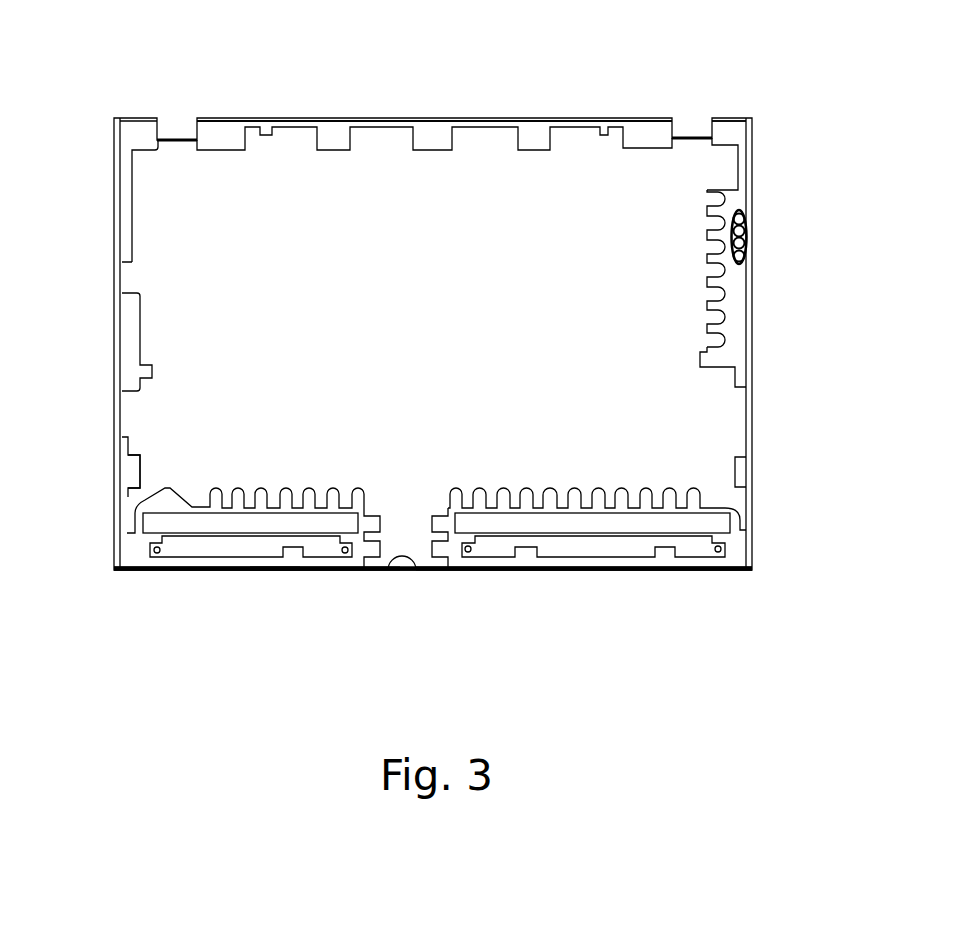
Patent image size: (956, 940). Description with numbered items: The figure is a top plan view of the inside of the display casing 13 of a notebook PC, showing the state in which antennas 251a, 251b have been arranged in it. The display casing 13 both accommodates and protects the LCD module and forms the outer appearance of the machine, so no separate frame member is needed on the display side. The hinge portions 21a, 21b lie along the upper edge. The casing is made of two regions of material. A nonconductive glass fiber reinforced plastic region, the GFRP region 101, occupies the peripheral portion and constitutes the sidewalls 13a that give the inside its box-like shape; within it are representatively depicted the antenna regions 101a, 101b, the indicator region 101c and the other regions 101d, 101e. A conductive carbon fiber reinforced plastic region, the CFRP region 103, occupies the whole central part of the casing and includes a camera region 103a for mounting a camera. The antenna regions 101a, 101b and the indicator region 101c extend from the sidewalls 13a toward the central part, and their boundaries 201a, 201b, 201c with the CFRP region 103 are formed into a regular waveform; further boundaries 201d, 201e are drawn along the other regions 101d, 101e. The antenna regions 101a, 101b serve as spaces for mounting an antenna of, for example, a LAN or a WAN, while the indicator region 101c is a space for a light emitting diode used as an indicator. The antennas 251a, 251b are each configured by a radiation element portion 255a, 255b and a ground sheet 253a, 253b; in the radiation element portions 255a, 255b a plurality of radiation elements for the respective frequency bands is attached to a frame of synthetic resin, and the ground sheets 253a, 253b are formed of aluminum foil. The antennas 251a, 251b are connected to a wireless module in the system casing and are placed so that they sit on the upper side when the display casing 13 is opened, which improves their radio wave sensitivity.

The display casing 13 is at (108, 148).
The sidewalls 13a is at (350, 118).
The hinge portion 21a is at (176, 113).
The hinge portion 21b is at (700, 112).
The GFRP region 101 is at (658, 565).
The antenna region 101a is at (240, 572).
The antenna region 101b is at (585, 565).
The indicator region 101c is at (740, 316).
The other region 101d is at (528, 128).
The other region 101e is at (124, 232).
The CFRP region 103 is at (458, 333).
The camera region 103a is at (380, 572).
The boundary 201a is at (276, 485).
The boundary 201b is at (540, 477).
The boundary 201c is at (688, 323).
The fourth recess 201d is at (522, 160).
The fifth recess 201e is at (150, 227).
The antenna 251a is at (368, 514).
The antenna 251b is at (736, 547).
The ground sheet 253a is at (332, 515).
The ground sheet 253b is at (660, 525).
The radiation element portion 255a is at (317, 548).
The radiation element portion 255b is at (694, 546).